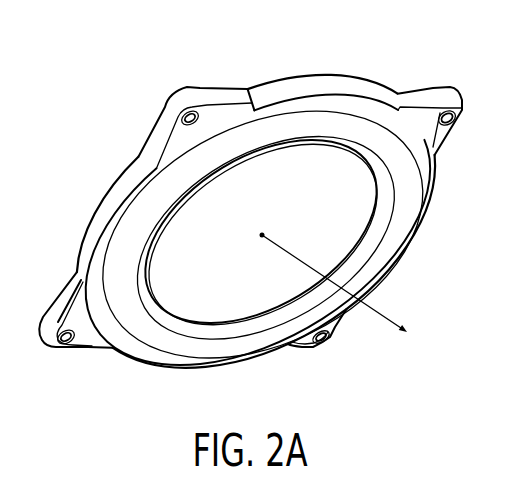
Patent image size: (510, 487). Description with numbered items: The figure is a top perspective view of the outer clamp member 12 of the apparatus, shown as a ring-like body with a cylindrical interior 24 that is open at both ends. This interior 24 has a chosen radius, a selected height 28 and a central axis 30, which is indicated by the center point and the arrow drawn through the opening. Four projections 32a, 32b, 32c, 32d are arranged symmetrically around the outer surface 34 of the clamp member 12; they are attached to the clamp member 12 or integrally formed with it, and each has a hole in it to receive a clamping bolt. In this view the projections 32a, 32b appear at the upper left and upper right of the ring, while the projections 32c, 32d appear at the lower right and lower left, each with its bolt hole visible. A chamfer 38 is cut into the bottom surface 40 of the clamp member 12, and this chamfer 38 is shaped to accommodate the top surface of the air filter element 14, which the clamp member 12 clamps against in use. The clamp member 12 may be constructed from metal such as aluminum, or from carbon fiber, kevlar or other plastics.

The outer clamp member 12 is at (88, 201).
The air filter element 14 is at (287, 193).
The cylindrical interior 24 is at (178, 253).
The height 28 is at (305, 94).
The axis 30 is at (265, 240).
The projection 32a is at (167, 95).
The projection 32b is at (437, 88).
The projection 32c is at (340, 330).
The projection 32d is at (55, 303).
The outer surface 34 is at (128, 182).
The chamfer 38 is at (378, 178).
The bottom surface 40 is at (127, 300).